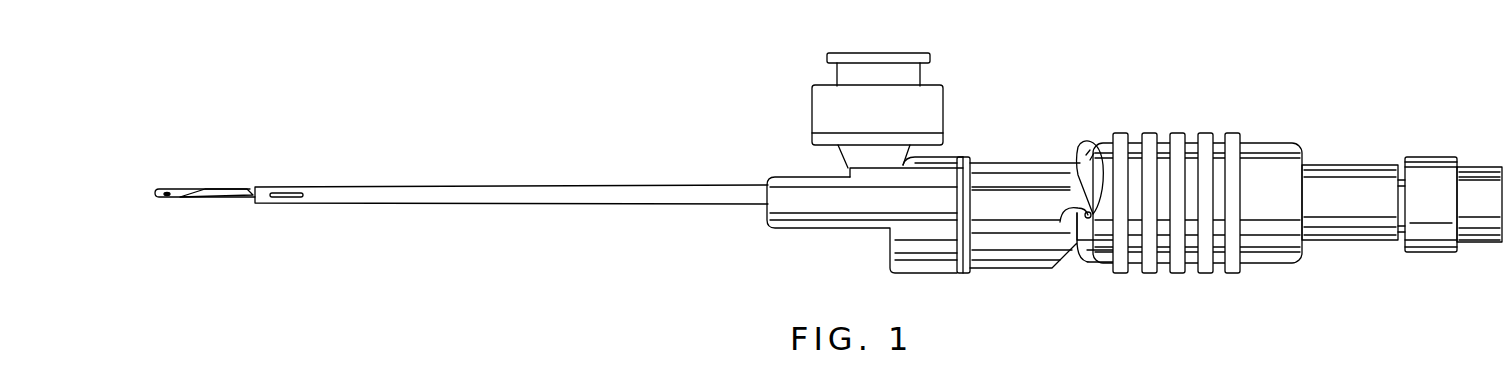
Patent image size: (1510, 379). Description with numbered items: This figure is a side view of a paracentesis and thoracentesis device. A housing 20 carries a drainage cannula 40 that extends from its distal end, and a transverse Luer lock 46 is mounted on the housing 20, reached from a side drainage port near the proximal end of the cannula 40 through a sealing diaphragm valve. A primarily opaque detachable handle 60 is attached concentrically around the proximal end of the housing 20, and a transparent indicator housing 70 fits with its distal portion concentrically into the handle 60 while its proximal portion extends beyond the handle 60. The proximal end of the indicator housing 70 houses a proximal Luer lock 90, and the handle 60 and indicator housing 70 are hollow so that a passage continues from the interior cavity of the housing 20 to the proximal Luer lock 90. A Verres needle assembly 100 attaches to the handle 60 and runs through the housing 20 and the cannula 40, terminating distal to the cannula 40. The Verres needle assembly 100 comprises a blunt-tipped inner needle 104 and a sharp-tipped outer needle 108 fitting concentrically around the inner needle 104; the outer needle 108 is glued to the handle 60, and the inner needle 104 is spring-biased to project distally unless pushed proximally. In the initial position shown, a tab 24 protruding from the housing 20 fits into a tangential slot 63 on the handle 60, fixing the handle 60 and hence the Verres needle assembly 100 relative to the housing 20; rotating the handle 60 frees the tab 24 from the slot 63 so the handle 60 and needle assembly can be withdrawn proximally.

The Verres needle assembly 100 is at (828, 171).
The inner needle 104 is at (192, 191).
The outer needle 108 is at (240, 193).
The drainage cannula 40 is at (507, 203).
The housing 20 is at (968, 155).
The transverse Luer lock 46 is at (962, 72).
The tangential slot 63 is at (1078, 158).
The tab 24 is at (1062, 218).
The detachable handle 60 is at (1275, 148).
The indicator housing 70 is at (1343, 168).
The proximal Luer lock 90 is at (1475, 153).